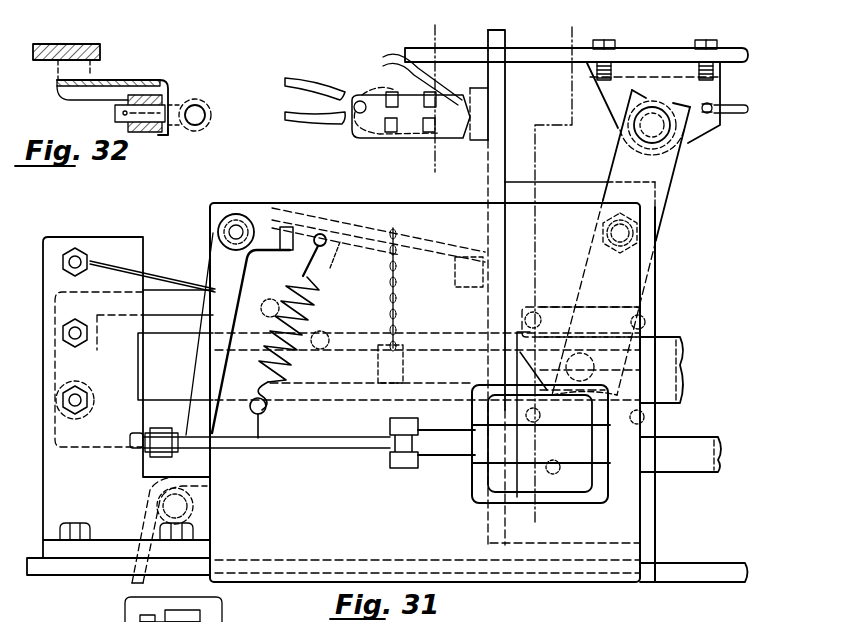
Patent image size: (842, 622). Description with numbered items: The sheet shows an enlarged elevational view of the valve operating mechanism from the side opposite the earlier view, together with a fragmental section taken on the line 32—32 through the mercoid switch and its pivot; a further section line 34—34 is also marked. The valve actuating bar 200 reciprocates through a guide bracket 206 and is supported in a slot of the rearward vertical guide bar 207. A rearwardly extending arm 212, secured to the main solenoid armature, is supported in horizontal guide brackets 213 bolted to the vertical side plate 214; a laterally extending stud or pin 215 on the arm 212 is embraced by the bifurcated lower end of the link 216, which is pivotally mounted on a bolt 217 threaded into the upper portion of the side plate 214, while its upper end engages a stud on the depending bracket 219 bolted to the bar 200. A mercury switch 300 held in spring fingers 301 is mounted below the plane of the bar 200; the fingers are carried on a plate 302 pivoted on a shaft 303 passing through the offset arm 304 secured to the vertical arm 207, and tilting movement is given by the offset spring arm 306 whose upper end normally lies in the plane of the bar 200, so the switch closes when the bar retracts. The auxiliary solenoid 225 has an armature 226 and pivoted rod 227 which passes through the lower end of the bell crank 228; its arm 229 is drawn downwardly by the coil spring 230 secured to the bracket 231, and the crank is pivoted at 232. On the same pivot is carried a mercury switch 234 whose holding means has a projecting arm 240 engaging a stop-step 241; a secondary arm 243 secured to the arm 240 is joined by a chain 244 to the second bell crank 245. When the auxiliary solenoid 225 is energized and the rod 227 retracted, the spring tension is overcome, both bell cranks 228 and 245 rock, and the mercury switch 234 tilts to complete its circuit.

In FIG. 32, the valve actuating bar 200 is at (57, 37).
In FIG. 31, the valve actuating bar 200 is at (648, 50).
In FIG. 31, the guide bracket 206 is at (205, 612).
In FIG. 31, the rearward vertical guide bar 207 is at (205, 618).
In FIG. 31, the rearwardly extending arm 212 is at (677, 353).
In FIG. 31, the horizontal guide brackets 213 is at (650, 323).
In FIG. 31, the vertical side plate 214 is at (650, 520).
In FIG. 31, the laterally extending stud or pin 215 is at (682, 370).
In FIG. 31, the link 216 is at (660, 175).
In FIG. 31, the bolt 217 is at (655, 236).
In FIG. 31, the depending bracket 219 is at (712, 99).
In FIG. 31, the auxiliary solenoid 225 is at (590, 500).
In FIG. 31, the armature 226 is at (455, 453).
In FIG. 31, the pivoted rod 227 is at (352, 448).
In FIG. 31, the bell crank 228 is at (205, 266).
In FIG. 31, the arm 229 is at (273, 213).
In FIG. 31, the coil spring 230 is at (306, 340).
In FIG. 31, the bracket 231 is at (290, 418).
In FIG. 31, the pivot pin 232 is at (216, 232).
In FIG. 31, the mercury switch 234 is at (357, 287).
In FIG. 31, the projecting arm 240 is at (408, 230).
In FIG. 31, the stop-step 241 is at (483, 280).
In FIG. 31, the secondary arm 243 is at (347, 217).
In FIG. 31, the chain 244 is at (397, 290).
In FIG. 31, the second bell crank 245 is at (437, 360).
In FIG. 32, the mercury switch 300 is at (212, 115).
In FIG. 31, the mercury switch 300 is at (370, 95).
In FIG. 32, the spring fingers 301 is at (200, 100).
In FIG. 32, the plate 302 is at (165, 135).
In FIG. 32, the shaft 303 is at (115, 115).
In FIG. 32, the offset arm 304 is at (140, 98).
In FIG. 31, the offset arm 304 is at (478, 86).
In FIG. 31, the offset spring arm 306 is at (385, 62).
In FIG. 31, the section line 32— 32 is at (462, 25).
In FIG. 31, the section line 34— 34 is at (592, 27).